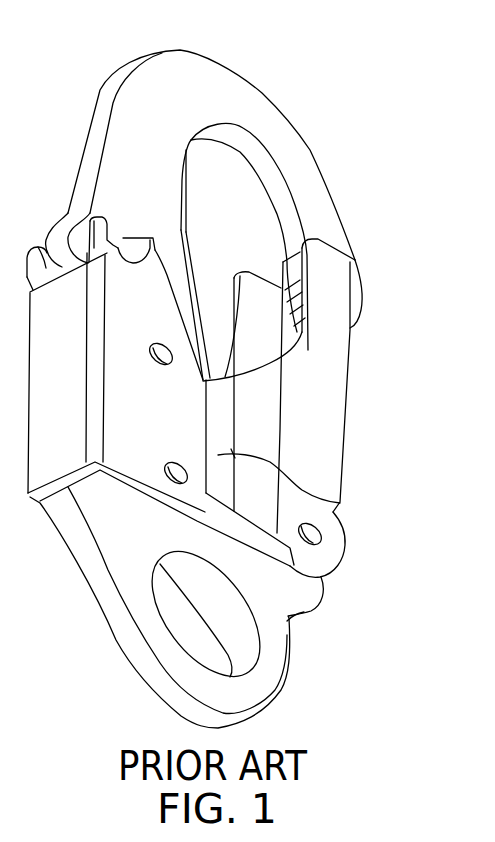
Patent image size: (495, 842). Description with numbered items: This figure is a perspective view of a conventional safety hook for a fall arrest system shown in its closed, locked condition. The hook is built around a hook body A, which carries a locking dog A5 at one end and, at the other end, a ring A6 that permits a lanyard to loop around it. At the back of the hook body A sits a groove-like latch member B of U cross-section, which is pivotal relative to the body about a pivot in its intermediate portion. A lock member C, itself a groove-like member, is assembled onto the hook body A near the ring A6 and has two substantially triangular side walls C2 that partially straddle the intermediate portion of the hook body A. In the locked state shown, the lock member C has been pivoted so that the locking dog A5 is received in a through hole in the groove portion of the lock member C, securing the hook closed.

The hook body A is at (315, 143).
The locking dog A5 is at (357, 302).
The ring A6 is at (268, 651).
The latch member B is at (43, 470).
The lock member C is at (335, 395).
The side walls C2 is at (340, 503).